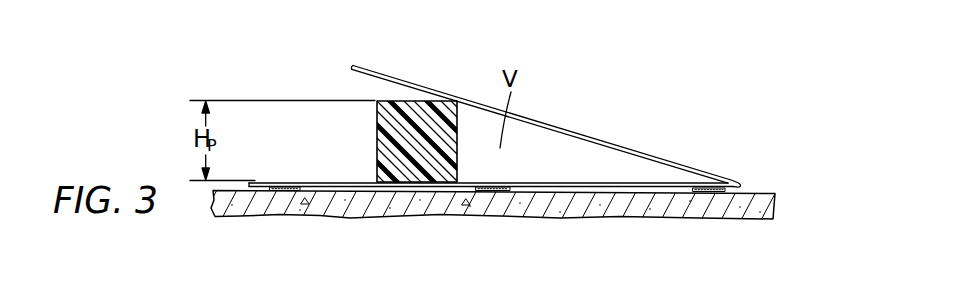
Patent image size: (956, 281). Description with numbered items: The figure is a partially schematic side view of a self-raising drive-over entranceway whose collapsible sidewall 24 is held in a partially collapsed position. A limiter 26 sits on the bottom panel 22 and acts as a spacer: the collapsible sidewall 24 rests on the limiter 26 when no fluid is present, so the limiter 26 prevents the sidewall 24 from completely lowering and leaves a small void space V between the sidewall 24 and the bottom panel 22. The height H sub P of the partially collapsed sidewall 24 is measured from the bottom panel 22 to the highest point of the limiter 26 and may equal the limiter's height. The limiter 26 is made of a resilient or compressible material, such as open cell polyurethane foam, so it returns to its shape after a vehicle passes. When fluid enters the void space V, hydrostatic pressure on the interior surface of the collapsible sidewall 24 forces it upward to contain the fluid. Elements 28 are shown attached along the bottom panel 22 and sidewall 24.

The bottom panel 22 is at (588, 183).
The collapsible sidewall 24 is at (542, 120).
The limiter 26 is at (377, 135).
The adhesive attachment 28 is at (270, 191).